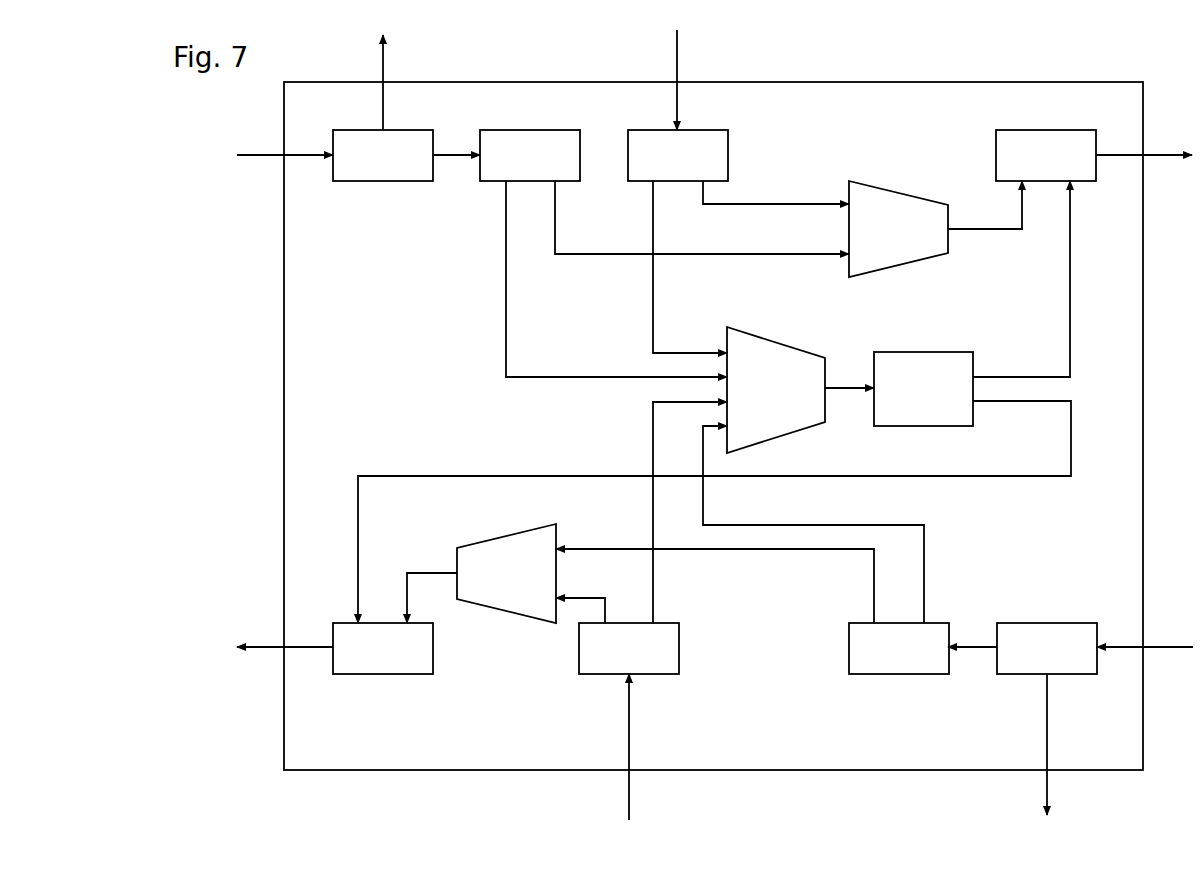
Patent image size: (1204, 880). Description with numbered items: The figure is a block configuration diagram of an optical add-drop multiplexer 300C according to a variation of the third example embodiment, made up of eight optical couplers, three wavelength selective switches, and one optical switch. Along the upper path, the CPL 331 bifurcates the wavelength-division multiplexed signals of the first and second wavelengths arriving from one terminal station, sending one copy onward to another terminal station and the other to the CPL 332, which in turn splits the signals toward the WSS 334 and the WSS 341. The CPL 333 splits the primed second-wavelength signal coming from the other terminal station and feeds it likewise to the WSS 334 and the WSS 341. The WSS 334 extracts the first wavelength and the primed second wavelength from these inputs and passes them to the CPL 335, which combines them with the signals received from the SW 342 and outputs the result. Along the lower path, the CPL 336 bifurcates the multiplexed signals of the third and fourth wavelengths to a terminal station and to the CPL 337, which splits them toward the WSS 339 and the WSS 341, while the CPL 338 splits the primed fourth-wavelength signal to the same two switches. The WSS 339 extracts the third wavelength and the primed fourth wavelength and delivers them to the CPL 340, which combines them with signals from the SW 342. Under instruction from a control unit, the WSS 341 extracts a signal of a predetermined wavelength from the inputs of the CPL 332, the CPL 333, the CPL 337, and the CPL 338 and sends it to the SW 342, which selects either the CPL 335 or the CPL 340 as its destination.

The optical add-drop multiplexer 300C is at (1020, 82).
The optical coupler 331 is at (408, 130).
The optical coupler 332 is at (556, 130).
The optical coupler 333 is at (702, 130).
The wavelength selective switch 334 is at (900, 193).
The optical coupler 335 is at (1048, 130).
The optical coupler 336 is at (1022, 673).
The optical coupler 337 is at (876, 673).
The optical coupler 338 is at (605, 673).
The wavelength selective switch 339 is at (505, 610).
The optical coupler 340 is at (359, 673).
The wavelength selective switch 341 is at (777, 342).
The optical switch 342 is at (925, 352).